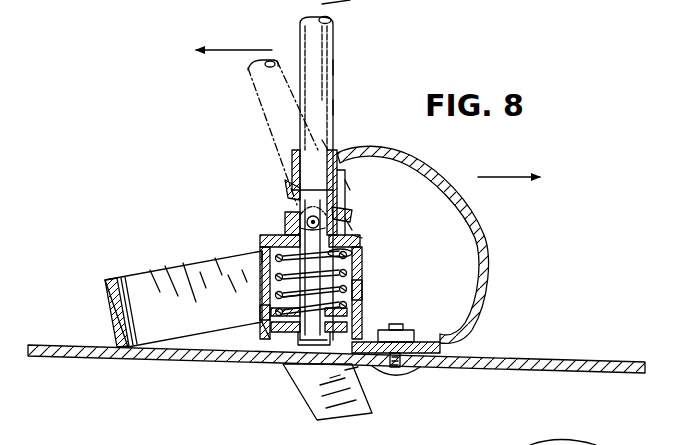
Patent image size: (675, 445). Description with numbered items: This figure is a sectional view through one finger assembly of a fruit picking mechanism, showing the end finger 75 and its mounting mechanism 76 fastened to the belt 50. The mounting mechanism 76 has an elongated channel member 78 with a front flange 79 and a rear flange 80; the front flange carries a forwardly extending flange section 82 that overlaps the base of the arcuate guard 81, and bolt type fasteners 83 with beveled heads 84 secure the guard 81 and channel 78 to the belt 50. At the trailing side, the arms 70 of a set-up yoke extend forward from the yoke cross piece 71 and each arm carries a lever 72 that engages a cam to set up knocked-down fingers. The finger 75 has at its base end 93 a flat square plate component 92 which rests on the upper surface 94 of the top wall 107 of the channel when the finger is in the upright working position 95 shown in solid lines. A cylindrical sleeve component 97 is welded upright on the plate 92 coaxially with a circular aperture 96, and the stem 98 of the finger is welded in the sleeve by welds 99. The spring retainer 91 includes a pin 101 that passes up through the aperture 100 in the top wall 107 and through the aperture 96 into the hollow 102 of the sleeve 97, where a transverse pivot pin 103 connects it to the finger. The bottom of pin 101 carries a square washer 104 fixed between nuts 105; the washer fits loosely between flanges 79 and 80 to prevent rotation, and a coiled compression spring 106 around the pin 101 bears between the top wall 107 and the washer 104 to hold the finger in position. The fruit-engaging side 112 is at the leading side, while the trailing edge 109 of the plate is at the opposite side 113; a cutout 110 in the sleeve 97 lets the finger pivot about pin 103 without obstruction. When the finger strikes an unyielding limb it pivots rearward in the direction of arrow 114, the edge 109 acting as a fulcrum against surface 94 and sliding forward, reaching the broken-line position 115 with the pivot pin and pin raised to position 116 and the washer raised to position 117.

The belt 50 is at (53, 346).
The arms of the yoke 70 is at (164, 272).
The yoke cross piece 71 is at (108, 292).
The lever 72 is at (318, 406).
The end finger 75 is at (334, 92).
The mounting mechanism 76 is at (363, 272).
The channel member 78 is at (261, 257).
The front flange of the channel 79 is at (363, 292).
The rear flange of the channel 80 is at (262, 312).
The arcuate guard 81 is at (485, 228).
The flange section 82 is at (428, 342).
The bolt type fasteners 83 is at (402, 329).
The heads of the fasteners 84 is at (396, 372).
The spring retainer 91 is at (275, 277).
The plate component 92 is at (352, 226).
The base end of the finger 93 is at (300, 228).
The upper surface of the channel 94 is at (340, 237).
The working position 95 is at (334, 70).
The circular aperture 96 is at (340, 212).
The cylindrical sleeve component 97 is at (341, 181).
The stem 98 is at (334, 111).
The welds 99 is at (291, 150).
The circular aperture in the top wall 100 is at (353, 252).
The pin 101 is at (275, 295).
The hollow of the sleeve 102 is at (348, 190).
The transverse pivot pin 103 is at (308, 218).
The square washer 104 is at (318, 336).
The nuts 105 is at (300, 316).
The coiled compression spring 106 is at (362, 306).
The top wall of the channel 107 is at (262, 246).
The trailing edge of the plate 109 is at (286, 232).
The cutout portion of the sleeve 110 is at (299, 192).
The leading side of the finger 112 is at (338, 35).
The opposite side of the finger 113 is at (296, 35).
The arrow 114 is at (224, 52).
The broken line position 115 is at (266, 100).
The raised position of pivot pin and pin 116 is at (327, 145).
The raised position of the washer 117 is at (262, 322).